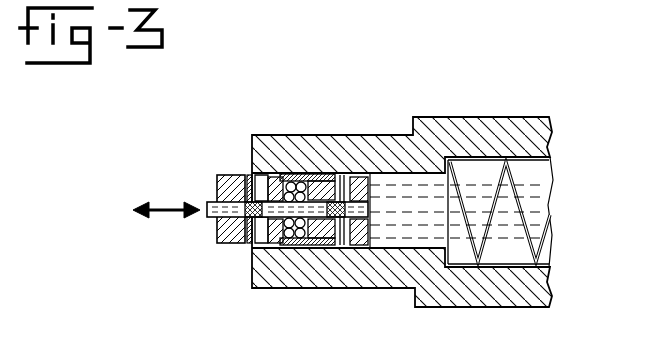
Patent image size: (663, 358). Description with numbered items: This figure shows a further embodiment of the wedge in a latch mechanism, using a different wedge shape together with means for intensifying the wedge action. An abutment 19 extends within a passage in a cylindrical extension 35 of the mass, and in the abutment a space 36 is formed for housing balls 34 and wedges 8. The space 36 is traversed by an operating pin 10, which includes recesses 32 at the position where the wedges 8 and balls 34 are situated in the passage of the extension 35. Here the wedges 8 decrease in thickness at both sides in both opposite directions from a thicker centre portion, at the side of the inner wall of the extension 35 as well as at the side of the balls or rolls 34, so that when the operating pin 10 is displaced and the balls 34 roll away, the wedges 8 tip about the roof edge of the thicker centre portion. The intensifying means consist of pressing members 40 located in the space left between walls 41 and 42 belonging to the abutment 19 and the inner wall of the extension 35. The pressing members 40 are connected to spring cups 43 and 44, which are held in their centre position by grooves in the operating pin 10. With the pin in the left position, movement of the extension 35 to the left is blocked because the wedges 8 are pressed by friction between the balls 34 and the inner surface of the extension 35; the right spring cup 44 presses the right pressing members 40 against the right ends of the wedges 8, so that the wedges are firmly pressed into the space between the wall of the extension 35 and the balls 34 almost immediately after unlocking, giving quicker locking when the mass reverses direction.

The wedges 8 is at (302, 182).
The operating pin 10 is at (207, 218).
The abutment 19 is at (222, 177).
The recesses 32 is at (240, 245).
The balls 34 is at (293, 180).
The cylindrical extension 35 is at (388, 152).
The space 36 is at (325, 247).
The pressing members 40 is at (268, 180).
The wall 41 is at (280, 182).
The wall 42 is at (322, 180).
The spring cup 43 is at (234, 177).
The spring cup 44 is at (385, 287).